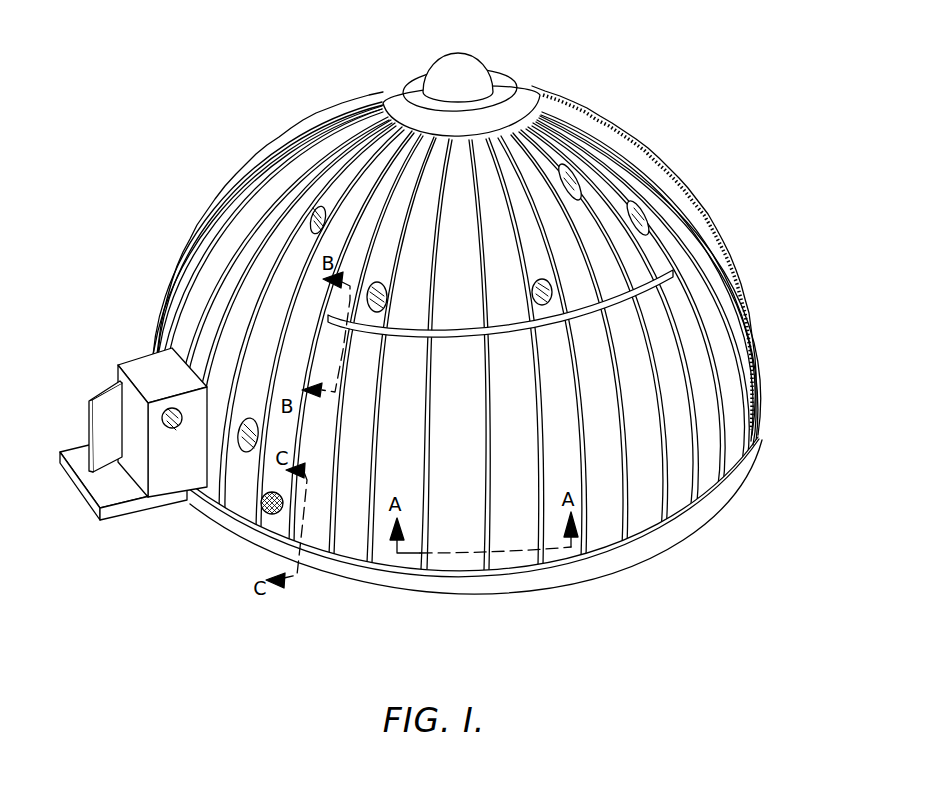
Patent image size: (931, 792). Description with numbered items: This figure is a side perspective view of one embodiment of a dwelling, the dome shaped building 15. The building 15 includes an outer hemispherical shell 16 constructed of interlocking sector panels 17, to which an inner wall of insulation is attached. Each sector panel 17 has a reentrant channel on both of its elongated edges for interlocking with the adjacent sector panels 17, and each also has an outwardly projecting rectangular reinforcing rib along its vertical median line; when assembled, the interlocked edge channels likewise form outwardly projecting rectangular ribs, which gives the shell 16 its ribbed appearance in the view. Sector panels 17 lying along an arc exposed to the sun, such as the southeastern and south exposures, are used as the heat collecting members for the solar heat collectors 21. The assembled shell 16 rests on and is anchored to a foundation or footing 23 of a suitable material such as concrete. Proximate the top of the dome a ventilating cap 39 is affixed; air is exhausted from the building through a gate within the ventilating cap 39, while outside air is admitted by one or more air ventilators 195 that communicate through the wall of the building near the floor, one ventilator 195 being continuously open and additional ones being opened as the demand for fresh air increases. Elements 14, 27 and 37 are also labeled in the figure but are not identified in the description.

The mounting bracket 14 is at (135, 353).
The dome shaped building 15 is at (627, 128).
The outer hemispherical shell 16 is at (735, 268).
The sector panels 17 is at (236, 498).
The solar heat collectors 21 is at (348, 548).
The foundation or footing 23 is at (582, 574).
The aperture 27 is at (641, 212).
The cap 37 is at (517, 90).
The ventilating cap 39 is at (488, 66).
The air ventilators 195 is at (266, 520).